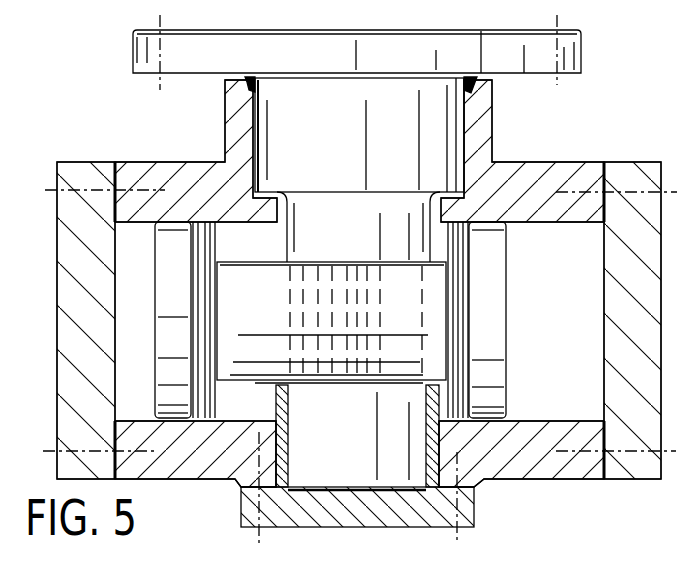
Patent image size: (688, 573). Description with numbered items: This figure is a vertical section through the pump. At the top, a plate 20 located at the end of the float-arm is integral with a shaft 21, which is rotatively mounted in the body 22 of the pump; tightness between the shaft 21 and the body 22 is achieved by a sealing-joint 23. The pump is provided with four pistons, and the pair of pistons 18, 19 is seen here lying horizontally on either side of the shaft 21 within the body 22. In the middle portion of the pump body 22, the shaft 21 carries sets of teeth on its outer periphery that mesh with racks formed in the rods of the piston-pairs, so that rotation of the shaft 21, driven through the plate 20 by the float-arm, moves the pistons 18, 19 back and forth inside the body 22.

The piston 18 is at (477, 310).
The piston 19 is at (173, 335).
The plate 20 is at (147, 55).
The shaft 21 is at (429, 123).
The body 22 is at (564, 177).
The sealing-joint 23 is at (227, 78).